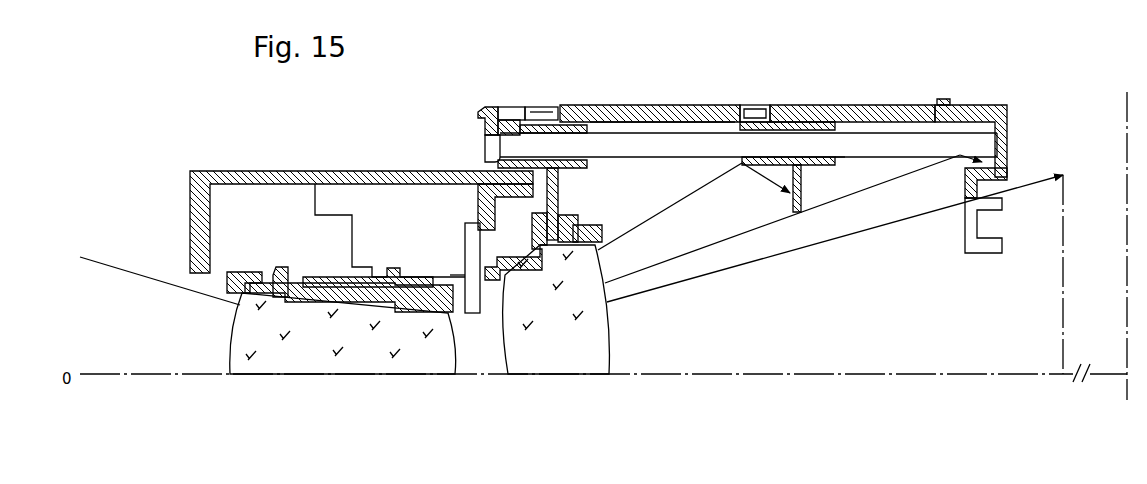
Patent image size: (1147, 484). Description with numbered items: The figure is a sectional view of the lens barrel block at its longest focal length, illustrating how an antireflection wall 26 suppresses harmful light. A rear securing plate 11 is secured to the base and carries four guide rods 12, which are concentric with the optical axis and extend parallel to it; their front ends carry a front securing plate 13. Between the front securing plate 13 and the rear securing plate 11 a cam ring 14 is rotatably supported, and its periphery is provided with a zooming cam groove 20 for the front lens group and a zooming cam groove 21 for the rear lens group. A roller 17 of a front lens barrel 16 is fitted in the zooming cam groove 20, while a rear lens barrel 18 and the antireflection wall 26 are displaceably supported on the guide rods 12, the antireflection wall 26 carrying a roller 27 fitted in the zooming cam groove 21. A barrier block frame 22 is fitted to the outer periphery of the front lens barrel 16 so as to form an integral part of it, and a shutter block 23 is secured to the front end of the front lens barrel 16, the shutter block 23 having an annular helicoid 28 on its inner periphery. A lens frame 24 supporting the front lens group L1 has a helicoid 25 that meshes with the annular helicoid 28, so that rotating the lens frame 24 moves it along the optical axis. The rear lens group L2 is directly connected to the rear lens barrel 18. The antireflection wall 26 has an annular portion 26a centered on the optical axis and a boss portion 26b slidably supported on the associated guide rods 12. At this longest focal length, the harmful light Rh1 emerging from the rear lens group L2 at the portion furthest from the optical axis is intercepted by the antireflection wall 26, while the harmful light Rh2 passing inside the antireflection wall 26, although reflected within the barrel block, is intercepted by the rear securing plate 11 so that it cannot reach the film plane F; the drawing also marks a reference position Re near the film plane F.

The rear securing plate 11 is at (967, 100).
The guide rods 12 is at (670, 103).
The front securing plate 13 is at (487, 105).
The cam ring 14 is at (633, 103).
The front lens barrel 16 is at (512, 105).
The roller 17 is at (535, 105).
The rear lens barrel 18 is at (562, 200).
The zooming cam groove for the front lens group 20 is at (556, 105).
The zooming cam groove for the rear lens group 21 is at (760, 105).
The barrier block frame 22 is at (248, 171).
The shutter block 23 is at (378, 171).
The lens frame 24 is at (280, 272).
The helicoid 25 is at (326, 283).
The antireflection wall 26 is at (818, 125).
The annular portion 26a is at (803, 190).
The boss portion 26b is at (838, 163).
The roller 27 is at (745, 105).
The annular helicoid 28 is at (344, 277).
The film plane F is at (1127, 145).
The exit pupil position Re is at (1025, 183).
The harmful light Rh1 is at (655, 212).
The harmful light Rh2 is at (878, 199).
The front lens group L1 is at (455, 383).
The rear lens group L2 is at (610, 383).